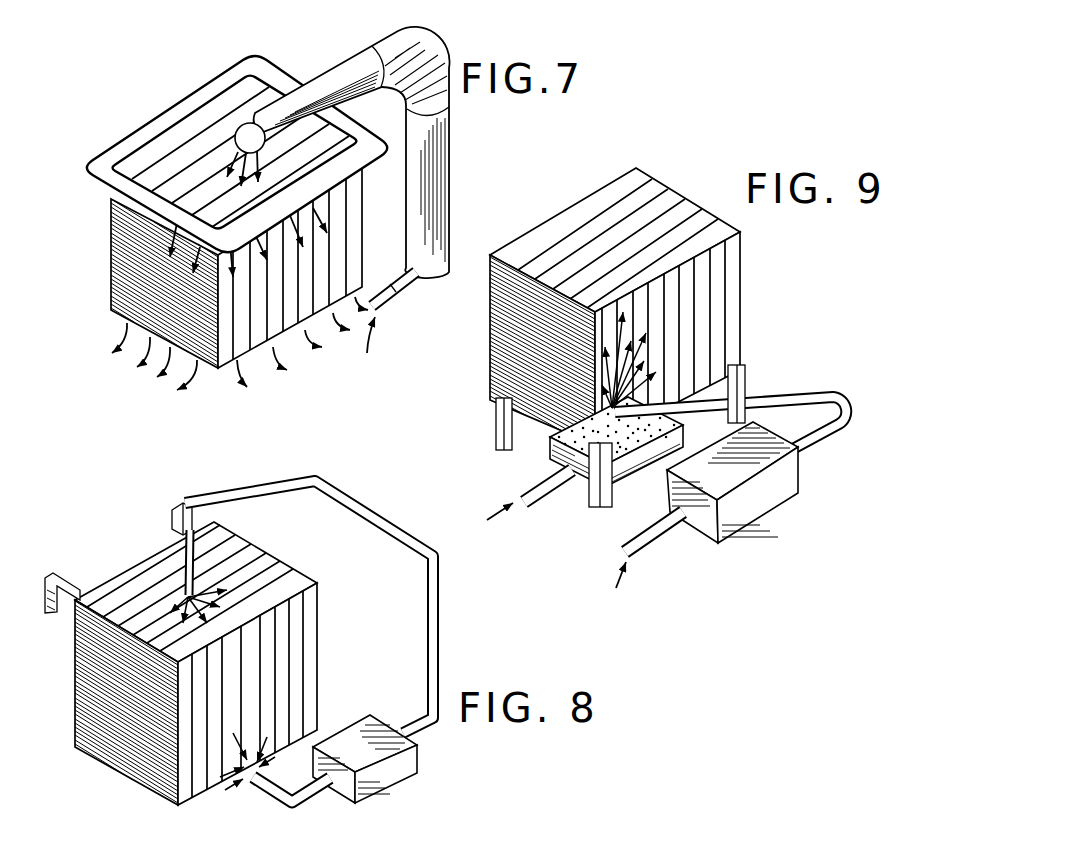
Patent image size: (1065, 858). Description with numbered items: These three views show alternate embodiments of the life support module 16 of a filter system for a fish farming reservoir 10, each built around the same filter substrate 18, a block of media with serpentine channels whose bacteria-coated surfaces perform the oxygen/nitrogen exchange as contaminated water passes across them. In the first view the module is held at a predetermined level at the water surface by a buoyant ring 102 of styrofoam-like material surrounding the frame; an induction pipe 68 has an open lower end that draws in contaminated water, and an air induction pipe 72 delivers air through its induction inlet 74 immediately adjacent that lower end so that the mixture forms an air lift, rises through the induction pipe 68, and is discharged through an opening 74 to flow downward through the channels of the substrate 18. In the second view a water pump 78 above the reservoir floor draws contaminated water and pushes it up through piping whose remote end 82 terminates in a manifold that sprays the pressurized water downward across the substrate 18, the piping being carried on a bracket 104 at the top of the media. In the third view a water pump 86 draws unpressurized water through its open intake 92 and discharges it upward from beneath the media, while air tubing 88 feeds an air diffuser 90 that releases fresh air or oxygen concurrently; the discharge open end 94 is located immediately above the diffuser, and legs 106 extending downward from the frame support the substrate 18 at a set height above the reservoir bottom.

In FIG. 7, the life support module 16 is at (202, 279).
In FIG. 9, the life support module 16 is at (648, 288).
In FIG. 8, the life support module 16 is at (225, 619).
In FIG. 7, the filter substrate 18 is at (110, 258).
In FIG. 9, the filter substrate 18 is at (741, 262).
In FIG. 8, the filter substrate 18 is at (312, 630).
In FIG. 7, the buoyant ring 102 is at (101, 160).
In FIG. 7, the induction inlet / discharge opening 74 is at (233, 125).
In FIG. 7, the induction pipe 68 is at (453, 153).
In FIG. 7, the air induction pipe 72 is at (396, 288).
In FIG. 8, the bracket 104 is at (172, 515).
In FIG. 8, the remote end of piping arrangement 82 is at (185, 592).
In FIG. 8, the fish farming reservoir 10 is at (53, 620).
In FIG. 8, the water pump 78 is at (388, 778).
In FIG. 9, the leg 106 is at (496, 438).
In FIG. 9, the air diffuser 90 is at (636, 468).
In FIG. 9, the discharge open end 94 is at (655, 375).
In FIG. 9, the air tubing 88 is at (551, 494).
In FIG. 9, the pump intake / open end 92 is at (605, 575).
In FIG. 9, the water pump 86 is at (771, 503).